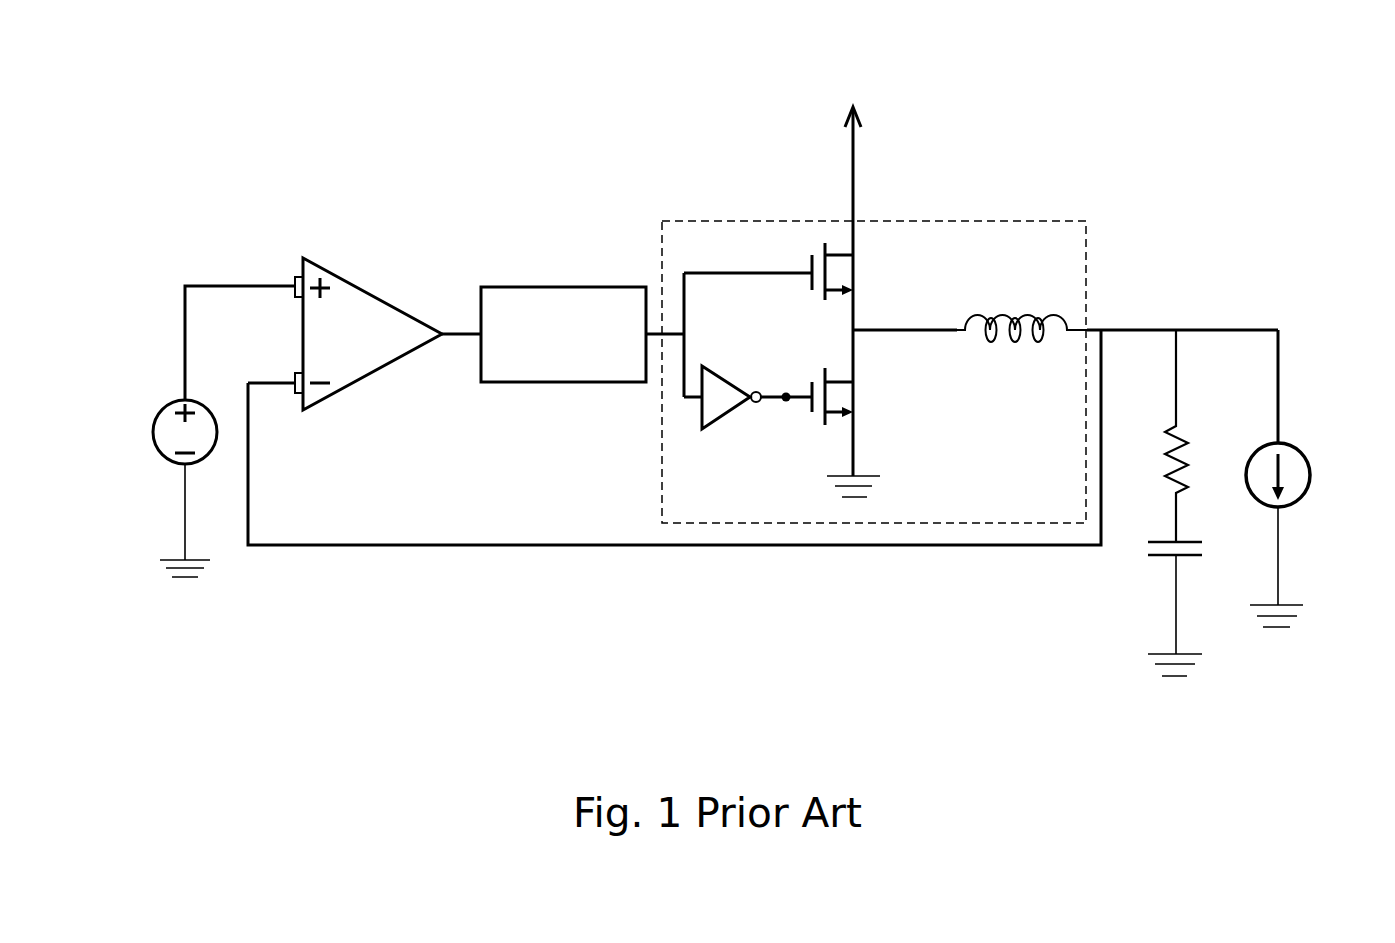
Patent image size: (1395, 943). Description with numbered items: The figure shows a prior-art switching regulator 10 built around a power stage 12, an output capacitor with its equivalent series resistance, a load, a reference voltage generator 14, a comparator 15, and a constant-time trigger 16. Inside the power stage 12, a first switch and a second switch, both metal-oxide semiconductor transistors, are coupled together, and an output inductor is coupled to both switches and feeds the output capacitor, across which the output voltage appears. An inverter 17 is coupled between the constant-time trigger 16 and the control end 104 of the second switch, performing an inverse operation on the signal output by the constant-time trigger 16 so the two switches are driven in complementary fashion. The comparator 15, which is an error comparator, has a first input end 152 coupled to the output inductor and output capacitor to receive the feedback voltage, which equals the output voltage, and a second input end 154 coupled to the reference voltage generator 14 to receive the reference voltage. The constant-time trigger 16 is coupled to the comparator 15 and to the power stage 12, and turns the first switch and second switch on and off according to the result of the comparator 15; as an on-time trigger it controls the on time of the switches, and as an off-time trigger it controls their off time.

The switching regulator 10 is at (1182, 160).
The power stage 12 is at (1086, 241).
The reference voltage generator 14 is at (152, 433).
The comparator 15 is at (385, 373).
The constant-time trigger 16 is at (562, 384).
The inverter 17 is at (731, 406).
The control end 104 is at (786, 404).
The first input end 152 is at (297, 400).
The second input end 154 is at (298, 277).